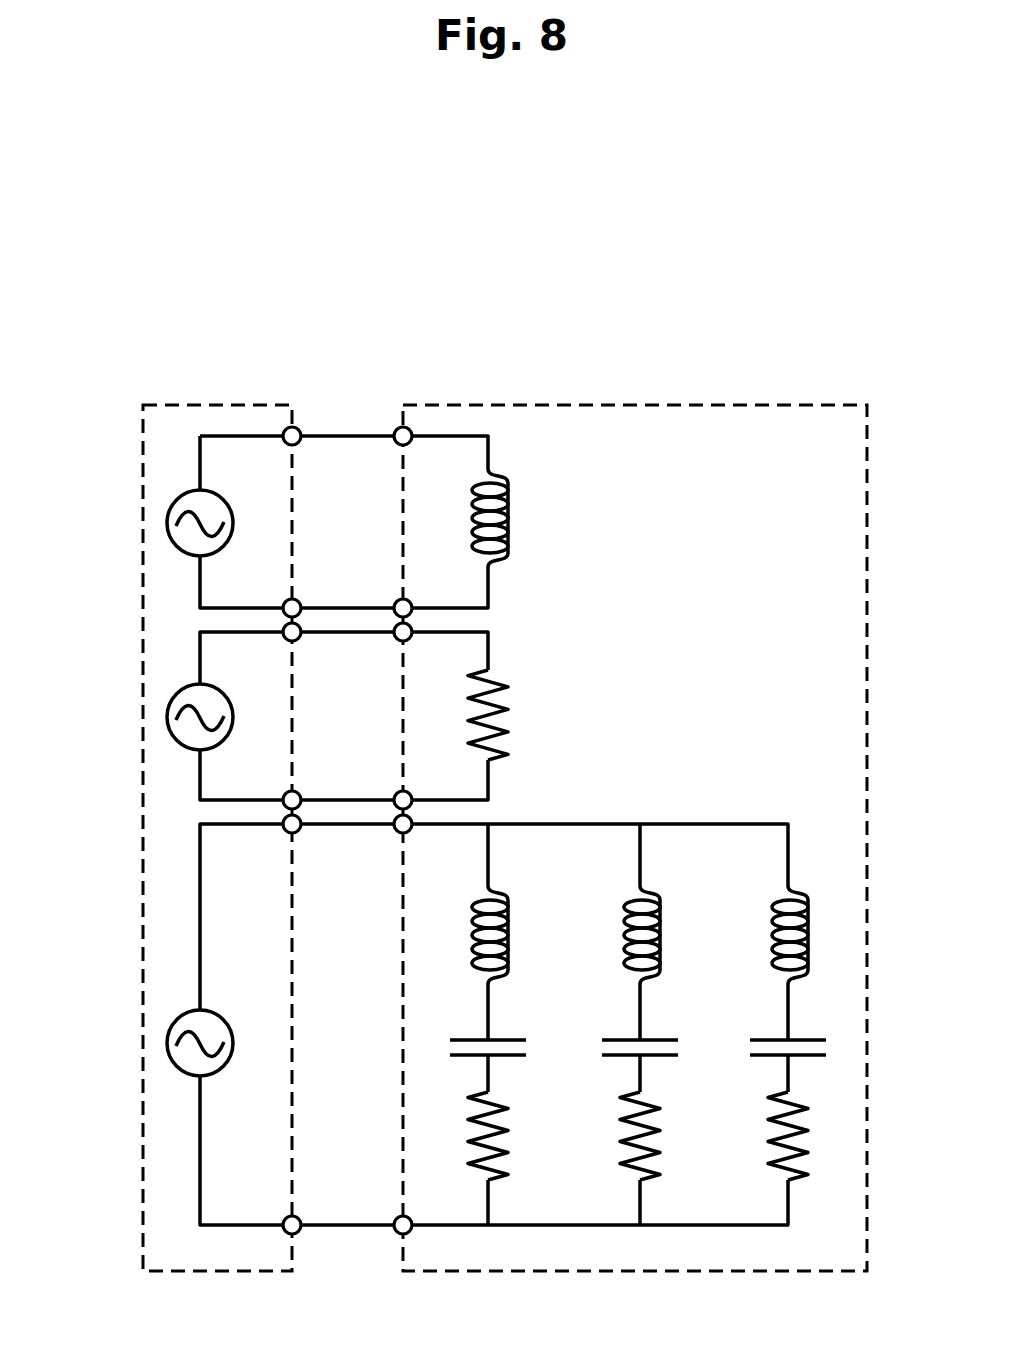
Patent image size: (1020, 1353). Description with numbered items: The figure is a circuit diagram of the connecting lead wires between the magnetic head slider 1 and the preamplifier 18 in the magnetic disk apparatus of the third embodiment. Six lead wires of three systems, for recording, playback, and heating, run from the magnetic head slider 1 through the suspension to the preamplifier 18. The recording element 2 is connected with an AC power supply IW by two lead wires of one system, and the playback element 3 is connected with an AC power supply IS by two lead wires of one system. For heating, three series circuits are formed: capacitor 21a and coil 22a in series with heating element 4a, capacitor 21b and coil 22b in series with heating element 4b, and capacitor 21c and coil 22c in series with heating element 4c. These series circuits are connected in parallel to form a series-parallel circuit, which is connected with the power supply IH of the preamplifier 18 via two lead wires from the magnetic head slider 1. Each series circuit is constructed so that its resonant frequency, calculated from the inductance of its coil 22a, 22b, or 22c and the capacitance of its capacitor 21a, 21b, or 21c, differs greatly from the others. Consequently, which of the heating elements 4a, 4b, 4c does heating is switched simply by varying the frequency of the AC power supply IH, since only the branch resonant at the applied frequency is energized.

The magnetic head slider 1 is at (621, 405).
The preamplifier 18 is at (222, 405).
The recording element 2 is at (508, 496).
The playback element 3 is at (508, 700).
The coil 22a is at (508, 912).
The coil 22b is at (660, 912).
The coil 22c is at (808, 912).
The capacitor 21a is at (512, 1040).
The capacitor 21b is at (664, 1040).
The capacitor 21c is at (822, 1040).
The heating element 4a is at (508, 1140).
The heating element 4b is at (660, 1140).
The heating element 4c is at (808, 1118).
The AC power supply IW is at (167, 523).
The AC power supply IS is at (167, 717).
The AC power supply IH is at (167, 1043).